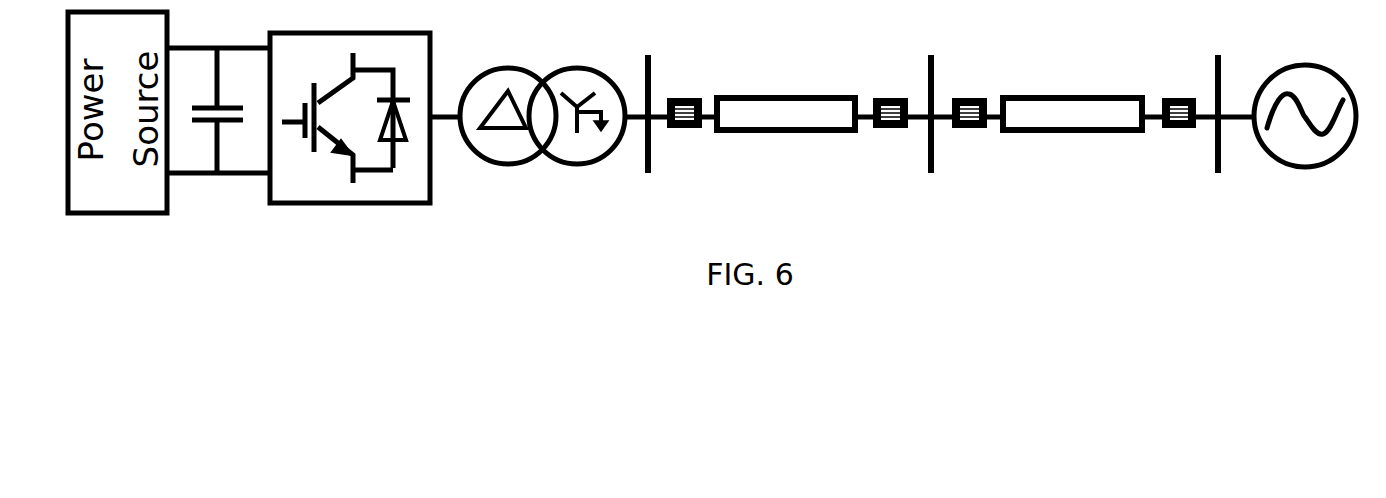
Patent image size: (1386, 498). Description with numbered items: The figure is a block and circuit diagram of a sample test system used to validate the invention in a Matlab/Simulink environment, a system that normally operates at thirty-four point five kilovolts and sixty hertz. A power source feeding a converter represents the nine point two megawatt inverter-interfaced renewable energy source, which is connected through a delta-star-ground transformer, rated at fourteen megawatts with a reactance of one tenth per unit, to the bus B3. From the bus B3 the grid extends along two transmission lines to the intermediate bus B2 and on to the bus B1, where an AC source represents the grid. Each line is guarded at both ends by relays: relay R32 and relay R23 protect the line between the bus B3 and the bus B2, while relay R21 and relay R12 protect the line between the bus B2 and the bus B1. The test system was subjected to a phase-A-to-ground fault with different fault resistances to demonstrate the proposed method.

The bus B1 is at (1222, 136).
The bus B2 is at (938, 136).
The bus B3 is at (647, 136).
The relay R12 is at (1174, 86).
The relay R21 is at (978, 86).
The relay R23 is at (893, 86).
The relay R32 is at (689, 86).